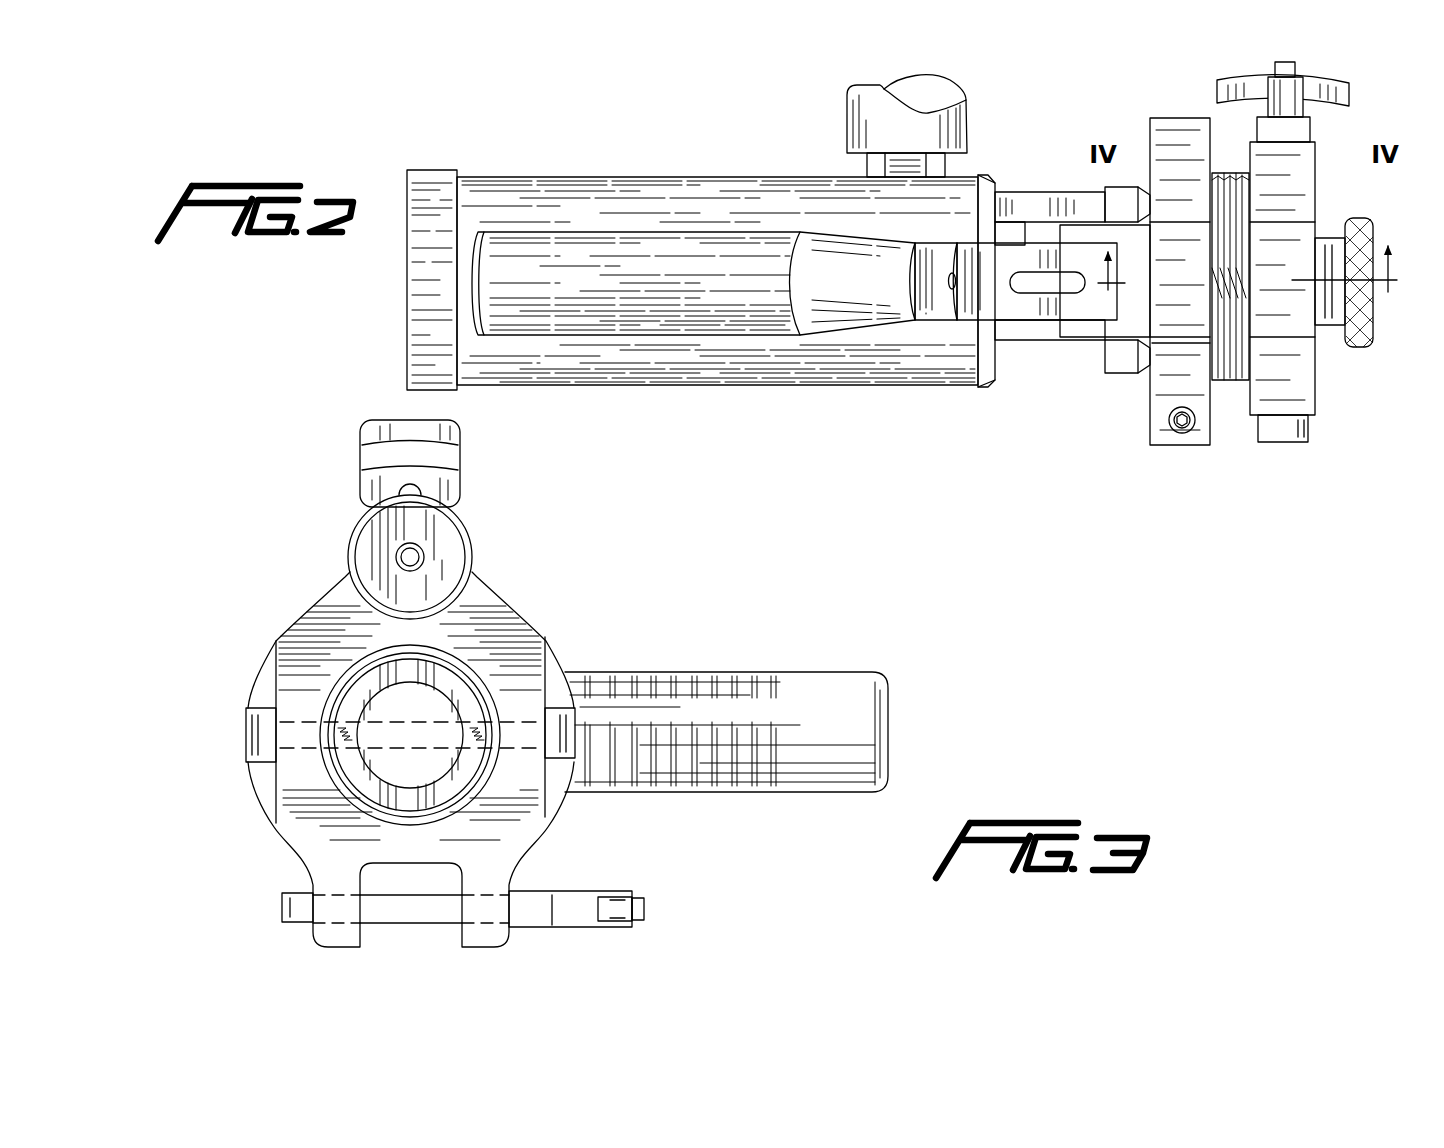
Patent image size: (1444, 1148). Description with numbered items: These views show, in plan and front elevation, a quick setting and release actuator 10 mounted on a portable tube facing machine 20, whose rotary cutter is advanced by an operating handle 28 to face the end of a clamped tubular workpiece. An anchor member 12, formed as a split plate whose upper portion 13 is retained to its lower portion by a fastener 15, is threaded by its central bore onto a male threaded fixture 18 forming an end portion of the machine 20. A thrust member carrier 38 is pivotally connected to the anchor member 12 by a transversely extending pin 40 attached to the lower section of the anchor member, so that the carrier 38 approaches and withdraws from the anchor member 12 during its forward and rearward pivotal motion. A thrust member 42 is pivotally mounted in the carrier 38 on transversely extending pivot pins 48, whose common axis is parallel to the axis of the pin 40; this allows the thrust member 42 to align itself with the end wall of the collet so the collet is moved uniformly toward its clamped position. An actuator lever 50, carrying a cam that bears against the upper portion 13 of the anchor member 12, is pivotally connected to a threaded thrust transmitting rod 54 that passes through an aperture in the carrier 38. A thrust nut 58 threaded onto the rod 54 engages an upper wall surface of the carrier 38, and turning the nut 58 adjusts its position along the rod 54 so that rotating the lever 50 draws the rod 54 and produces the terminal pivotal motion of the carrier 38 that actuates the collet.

In FIG. 2, the quick setting and release actuator 10 is at (1175, 472).
In FIG. 3, the quick setting and release actuator 10 is at (547, 613).
In FIG. 2, the anchor member 12 is at (1150, 114).
In FIG. 2, the upper portion 13 is at (1150, 400).
In FIG. 2, the fastener 15 is at (1190, 435).
In FIG. 2, the male threaded fixture 18 is at (1220, 388).
In FIG. 2, the portable tube facing machine 20 is at (615, 175).
In FIG. 2, the operating handle 28 is at (968, 128).
In FIG. 3, the operating handle 28 is at (795, 683).
In FIG. 2, the thrust member carrier 38 is at (1318, 392).
In FIG. 3, the thrust member carrier 38 is at (528, 840).
In FIG. 2, the pin 40 is at (1315, 130).
In FIG. 3, the pin 40 is at (280, 905).
In FIG. 3, the thrust member 42 is at (334, 650).
In FIG. 2, the pivot pins 48 is at (1310, 428).
In FIG. 3, the pivot pins 48 is at (252, 775).
In FIG. 2, the actuator lever 50 is at (713, 333).
In FIG. 3, the actuator lever 50 is at (357, 470).
In FIG. 2, the thrust transmitting rod 54 is at (1097, 307).
In FIG. 2, the thrust nut 58 is at (1372, 218).
In FIG. 3, the thrust nut 58 is at (455, 545).